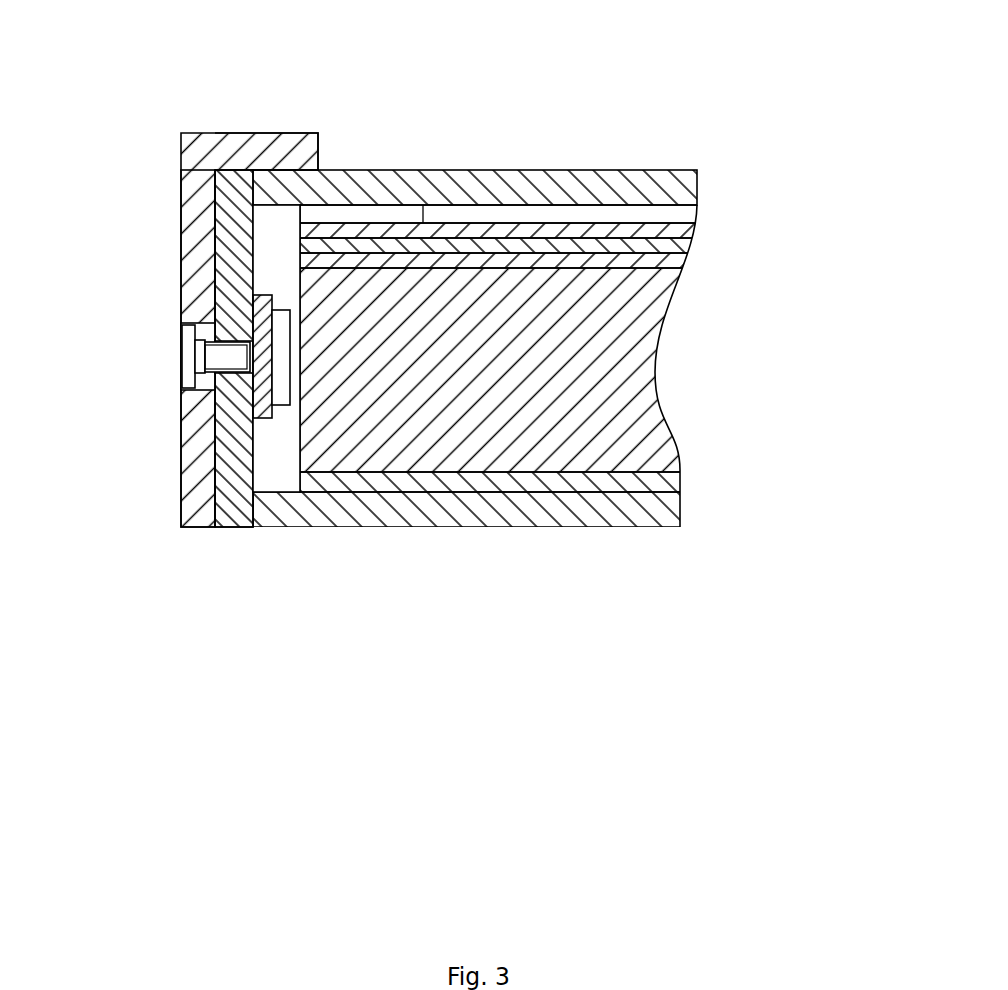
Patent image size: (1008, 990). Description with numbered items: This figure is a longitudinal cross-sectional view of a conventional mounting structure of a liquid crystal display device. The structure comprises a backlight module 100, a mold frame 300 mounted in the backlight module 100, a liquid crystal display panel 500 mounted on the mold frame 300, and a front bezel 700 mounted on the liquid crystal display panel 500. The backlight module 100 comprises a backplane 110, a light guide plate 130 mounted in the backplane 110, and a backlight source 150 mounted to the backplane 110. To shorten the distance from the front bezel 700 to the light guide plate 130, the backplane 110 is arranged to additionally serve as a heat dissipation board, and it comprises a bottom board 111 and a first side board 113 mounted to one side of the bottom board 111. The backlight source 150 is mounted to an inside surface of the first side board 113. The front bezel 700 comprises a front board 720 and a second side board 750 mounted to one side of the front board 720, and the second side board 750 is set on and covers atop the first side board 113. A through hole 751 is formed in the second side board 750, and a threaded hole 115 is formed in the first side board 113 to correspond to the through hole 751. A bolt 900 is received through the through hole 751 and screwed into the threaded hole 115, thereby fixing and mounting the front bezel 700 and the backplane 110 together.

The backlight module 100 is at (682, 452).
The backplane 110 is at (243, 507).
The bottom board 111 is at (560, 513).
The first side board 113 is at (227, 477).
The threaded hole 115 is at (223, 375).
The light guide plate 130 is at (580, 395).
The backlight source 150 is at (280, 357).
The mold frame 300 is at (276, 235).
The liquid crystal display panel 500 is at (450, 187).
The front bezel 700 is at (181, 147).
The front board 720 is at (290, 150).
The second side board 750 is at (203, 194).
The through hole 751 is at (208, 338).
The bolt 900 is at (197, 358).